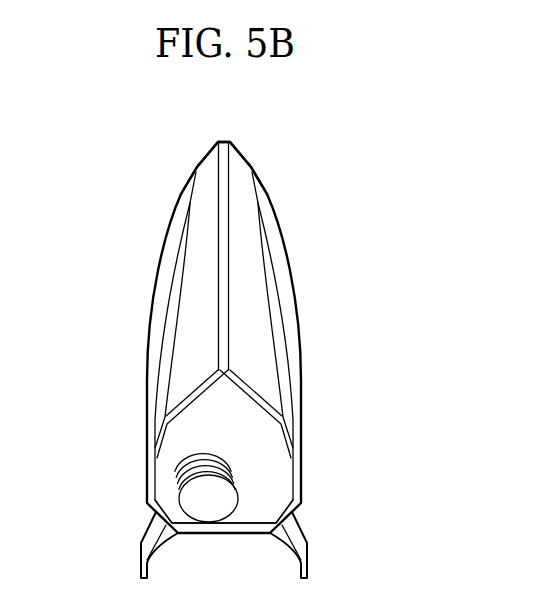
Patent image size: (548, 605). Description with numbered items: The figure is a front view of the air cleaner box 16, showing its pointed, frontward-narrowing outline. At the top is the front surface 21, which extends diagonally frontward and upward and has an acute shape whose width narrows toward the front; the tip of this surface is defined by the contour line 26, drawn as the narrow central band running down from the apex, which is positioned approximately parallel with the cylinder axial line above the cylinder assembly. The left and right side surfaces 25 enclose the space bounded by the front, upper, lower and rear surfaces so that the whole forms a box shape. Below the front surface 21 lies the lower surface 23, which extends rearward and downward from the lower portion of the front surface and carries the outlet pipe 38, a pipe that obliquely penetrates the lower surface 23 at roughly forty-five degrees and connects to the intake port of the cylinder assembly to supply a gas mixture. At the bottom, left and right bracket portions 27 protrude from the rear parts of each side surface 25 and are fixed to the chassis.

The air cleaner box 16 is at (245, 158).
The front surface 21 is at (238, 223).
The contour line 26 is at (226, 270).
The side surface 25 is at (154, 314).
The lower surface 23 is at (270, 463).
The outlet pipe 38 is at (177, 482).
The bracket portion 27 is at (140, 563).